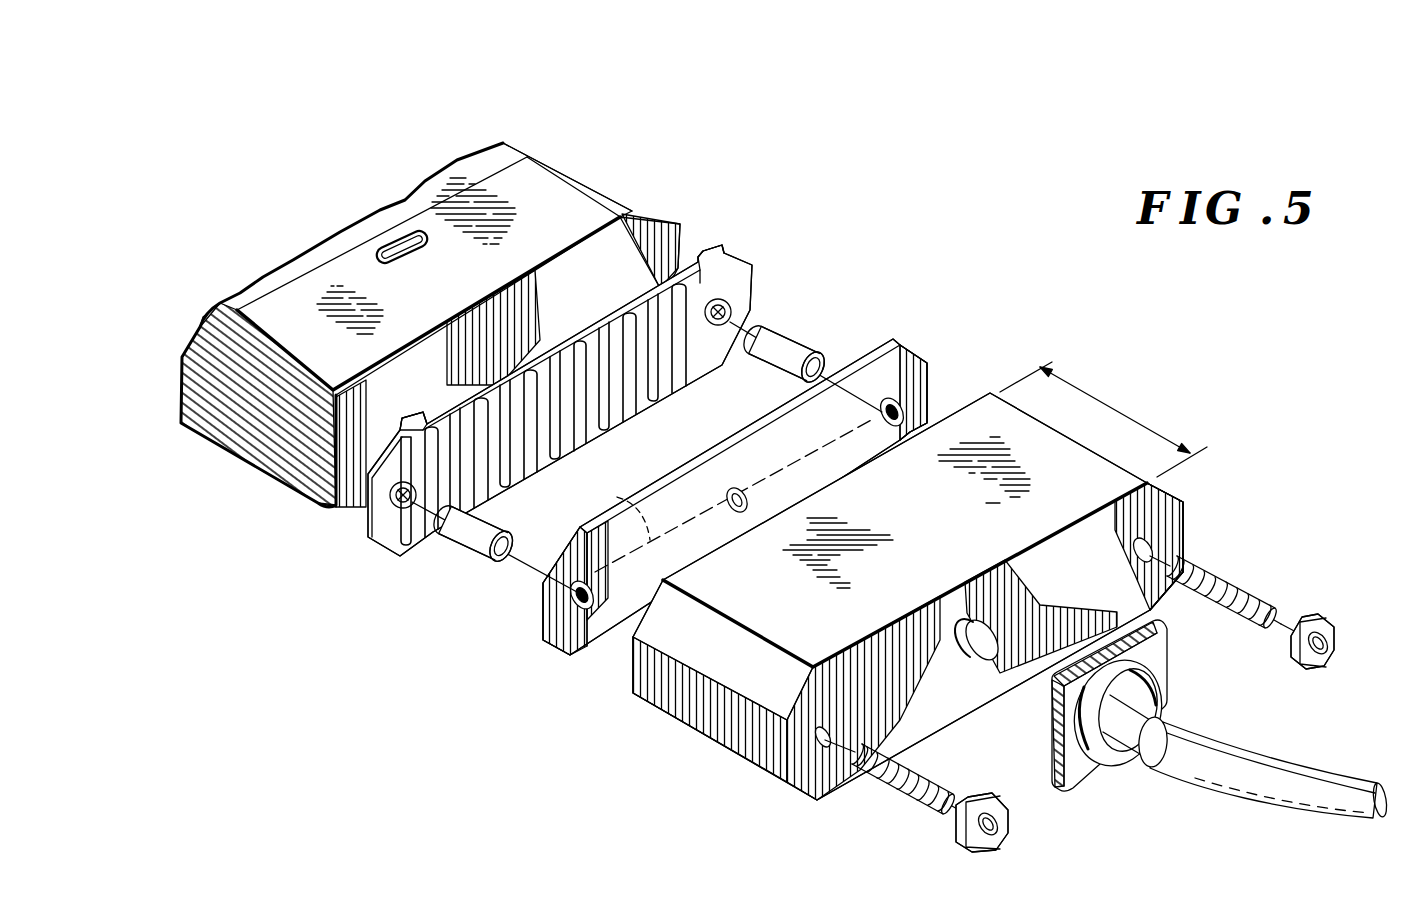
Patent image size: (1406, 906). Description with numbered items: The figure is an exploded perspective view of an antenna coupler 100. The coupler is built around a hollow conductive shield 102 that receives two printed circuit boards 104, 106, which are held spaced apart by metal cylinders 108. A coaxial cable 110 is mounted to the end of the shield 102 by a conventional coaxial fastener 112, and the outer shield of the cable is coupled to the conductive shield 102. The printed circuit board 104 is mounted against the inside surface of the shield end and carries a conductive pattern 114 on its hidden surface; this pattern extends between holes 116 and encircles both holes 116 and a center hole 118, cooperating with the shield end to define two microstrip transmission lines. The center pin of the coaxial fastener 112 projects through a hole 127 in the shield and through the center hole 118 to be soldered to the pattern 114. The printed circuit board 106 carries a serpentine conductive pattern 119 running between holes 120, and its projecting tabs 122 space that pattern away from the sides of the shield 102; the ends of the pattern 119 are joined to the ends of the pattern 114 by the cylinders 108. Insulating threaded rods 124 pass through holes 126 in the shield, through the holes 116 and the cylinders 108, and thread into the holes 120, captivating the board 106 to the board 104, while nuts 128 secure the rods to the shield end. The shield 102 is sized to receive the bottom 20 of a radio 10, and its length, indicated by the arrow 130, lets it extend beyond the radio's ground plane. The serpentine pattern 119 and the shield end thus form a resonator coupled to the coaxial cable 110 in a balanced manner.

The radio 10 is at (570, 197).
The bottom of radio 20 is at (656, 233).
The antenna coupler 100 is at (708, 698).
The conductive shield 102 is at (1162, 493).
The printed circuit board 104 is at (901, 347).
The printed circuit board 106 is at (752, 266).
The metal cylinders 108 is at (785, 339).
The coaxial cable 110 is at (1236, 754).
The coaxial fastener 112 is at (1157, 656).
The conductive pattern 114 is at (618, 508).
The holes 116 is at (898, 403).
The center hole 118 is at (727, 489).
The serpentine conductive pattern 119 is at (610, 428).
The holes 120 is at (732, 316).
The tabs 122 is at (716, 244).
The threaded rods 124 is at (1247, 586).
The holes 126 is at (1158, 548).
The hole 127 is at (969, 649).
The nuts 128 is at (1330, 617).
The arrow 130 is at (1130, 397).